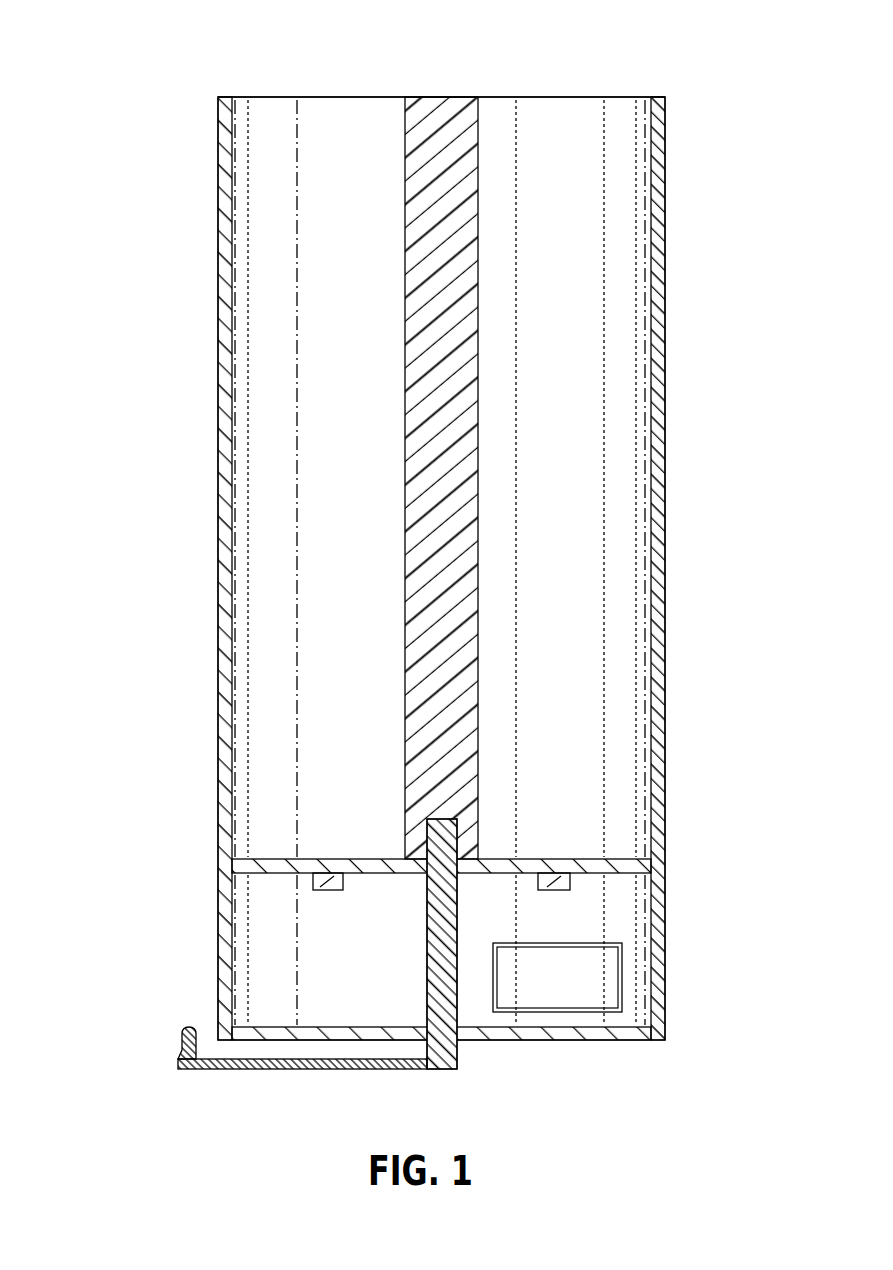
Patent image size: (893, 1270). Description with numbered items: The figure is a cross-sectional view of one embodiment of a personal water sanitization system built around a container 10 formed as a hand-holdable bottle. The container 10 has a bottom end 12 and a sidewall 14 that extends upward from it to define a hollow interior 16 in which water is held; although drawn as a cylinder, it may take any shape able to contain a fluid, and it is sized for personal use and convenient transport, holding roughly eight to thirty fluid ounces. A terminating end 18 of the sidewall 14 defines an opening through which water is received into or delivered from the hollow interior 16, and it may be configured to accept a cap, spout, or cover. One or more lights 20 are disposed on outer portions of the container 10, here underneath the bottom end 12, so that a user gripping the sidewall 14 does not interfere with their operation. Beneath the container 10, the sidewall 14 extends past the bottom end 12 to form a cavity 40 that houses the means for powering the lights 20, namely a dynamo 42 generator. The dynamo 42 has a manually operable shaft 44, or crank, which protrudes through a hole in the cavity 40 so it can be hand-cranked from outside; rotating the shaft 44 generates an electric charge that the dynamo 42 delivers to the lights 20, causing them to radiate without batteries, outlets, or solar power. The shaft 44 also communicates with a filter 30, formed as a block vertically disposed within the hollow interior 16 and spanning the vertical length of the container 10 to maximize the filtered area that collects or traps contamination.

The container 10 is at (197, 38).
The bottom end 12 is at (620, 865).
The sidewall 14 is at (660, 360).
The hollow interior 16 is at (578, 122).
The terminating end 18 is at (660, 100).
The lights 20 is at (323, 880).
The filter 30 is at (439, 117).
The cavity 40 is at (268, 970).
The dynamo 42 is at (558, 985).
The shaft 44 is at (443, 1050).